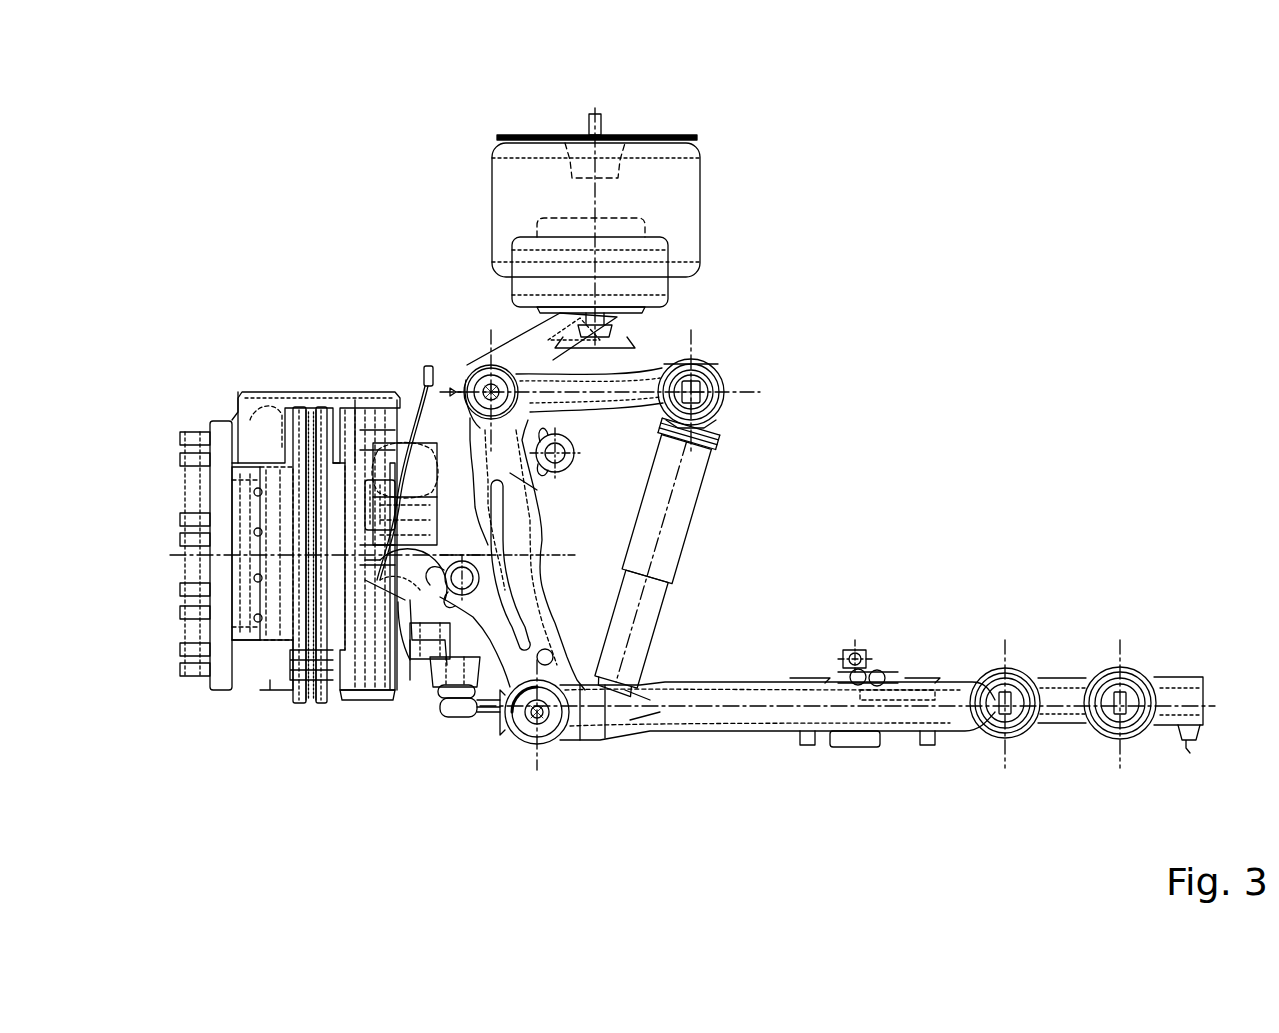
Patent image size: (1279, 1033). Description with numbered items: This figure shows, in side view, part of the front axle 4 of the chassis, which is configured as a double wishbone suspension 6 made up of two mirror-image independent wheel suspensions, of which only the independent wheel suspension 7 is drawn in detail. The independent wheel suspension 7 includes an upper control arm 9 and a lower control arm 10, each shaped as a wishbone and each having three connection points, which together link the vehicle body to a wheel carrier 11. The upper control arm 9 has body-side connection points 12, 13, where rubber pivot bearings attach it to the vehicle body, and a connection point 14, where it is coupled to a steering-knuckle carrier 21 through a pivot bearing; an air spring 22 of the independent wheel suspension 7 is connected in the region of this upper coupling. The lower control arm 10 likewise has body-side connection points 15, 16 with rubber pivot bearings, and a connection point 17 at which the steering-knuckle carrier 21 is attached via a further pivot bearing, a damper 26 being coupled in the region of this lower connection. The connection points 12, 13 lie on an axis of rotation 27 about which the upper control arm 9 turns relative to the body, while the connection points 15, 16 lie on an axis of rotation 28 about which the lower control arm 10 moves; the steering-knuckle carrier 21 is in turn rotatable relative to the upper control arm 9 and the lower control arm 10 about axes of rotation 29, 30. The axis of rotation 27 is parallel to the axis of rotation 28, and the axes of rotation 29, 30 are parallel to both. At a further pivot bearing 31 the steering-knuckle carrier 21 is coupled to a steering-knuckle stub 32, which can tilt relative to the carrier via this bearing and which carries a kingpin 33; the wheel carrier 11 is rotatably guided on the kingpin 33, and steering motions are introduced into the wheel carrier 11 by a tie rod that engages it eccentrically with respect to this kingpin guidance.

The front axle 4 is at (596, 181).
The double wishbone suspension 6 is at (907, 212).
The independent wheel suspension 7 is at (265, 272).
The upper control arm 9 is at (628, 375).
The lower control arm 10 is at (780, 718).
The wheel carrier 11 is at (263, 733).
The connection point 12 is at (835, 234).
The connection point 13 is at (835, 234).
The connection point 14 is at (690, 234).
The connection point 15 is at (998, 760).
The connection point 16 is at (998, 760).
The connection point 17 is at (550, 770).
The steering-knuckle carrier 21 is at (452, 718).
The air spring 22 is at (655, 140).
The damper 26 is at (700, 495).
The axis of rotation 27 is at (728, 358).
The axis of rotation 28 is at (978, 740).
The axis of rotation 29 is at (452, 357).
The axis of rotation 30 is at (518, 755).
The pivot bearing 31 is at (405, 640).
The steering-knuckle stub 32 is at (340, 461).
The kingpin 33 is at (352, 700).